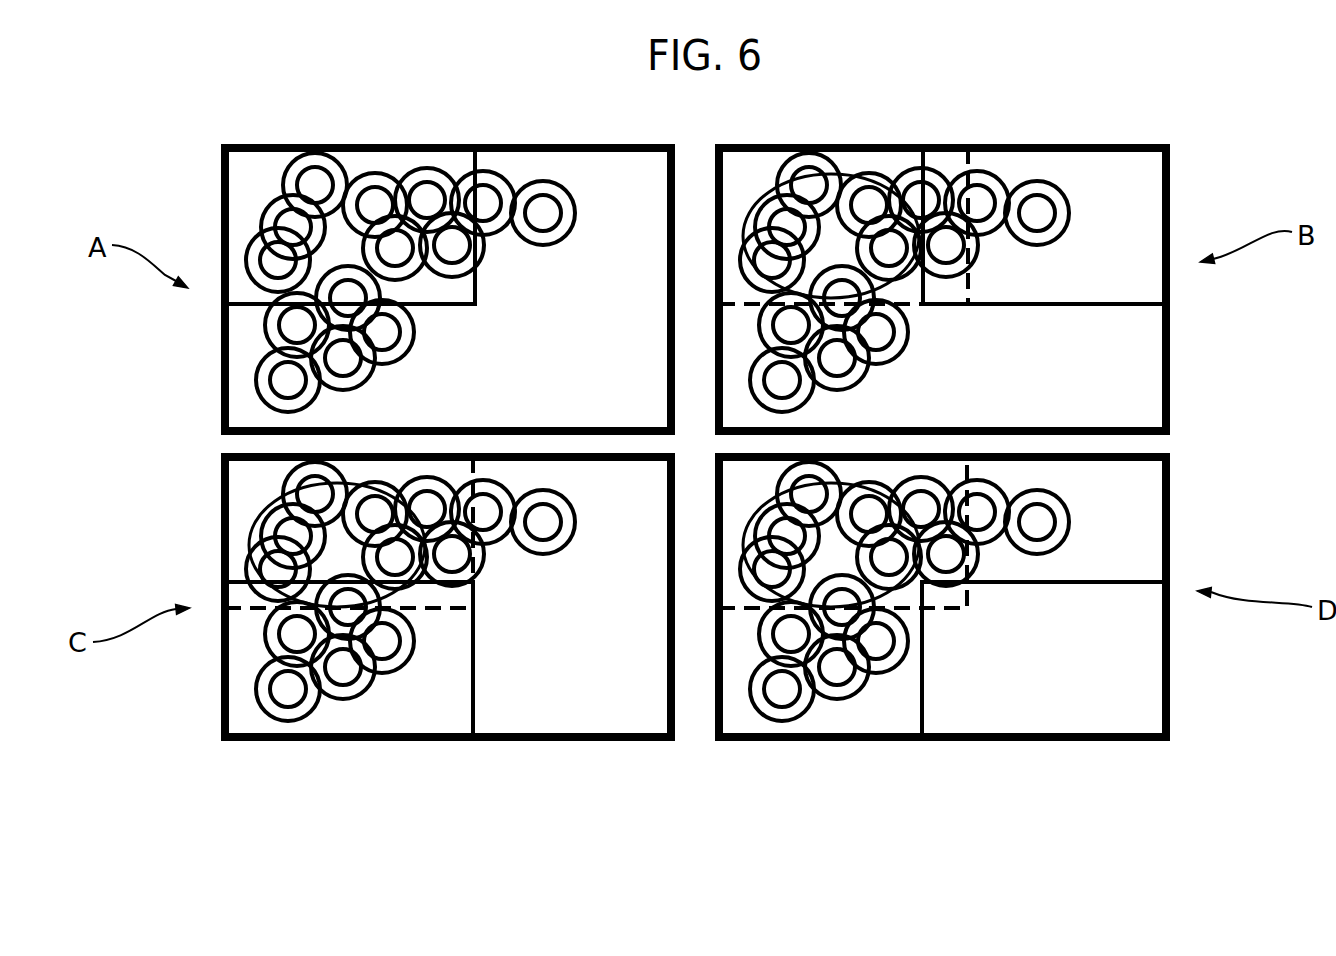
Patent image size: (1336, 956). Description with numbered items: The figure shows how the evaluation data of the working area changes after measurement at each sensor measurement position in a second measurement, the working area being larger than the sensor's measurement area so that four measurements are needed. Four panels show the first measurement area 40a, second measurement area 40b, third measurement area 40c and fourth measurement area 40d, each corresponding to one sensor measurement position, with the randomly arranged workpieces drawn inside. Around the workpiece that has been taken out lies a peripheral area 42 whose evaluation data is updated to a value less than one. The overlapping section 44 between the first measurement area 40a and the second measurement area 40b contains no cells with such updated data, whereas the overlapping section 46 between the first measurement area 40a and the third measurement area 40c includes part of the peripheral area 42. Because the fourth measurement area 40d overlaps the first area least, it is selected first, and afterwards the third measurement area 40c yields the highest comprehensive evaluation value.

The first measurement area 40a is at (457, 308).
The second measurement area 40b is at (1113, 310).
The third measurement area 40c is at (475, 673).
The fourth measurement area 40d is at (917, 690).
The peripheral area 42 is at (413, 603).
The overlapping section 44 is at (950, 288).
The overlapping section 46 is at (240, 595).